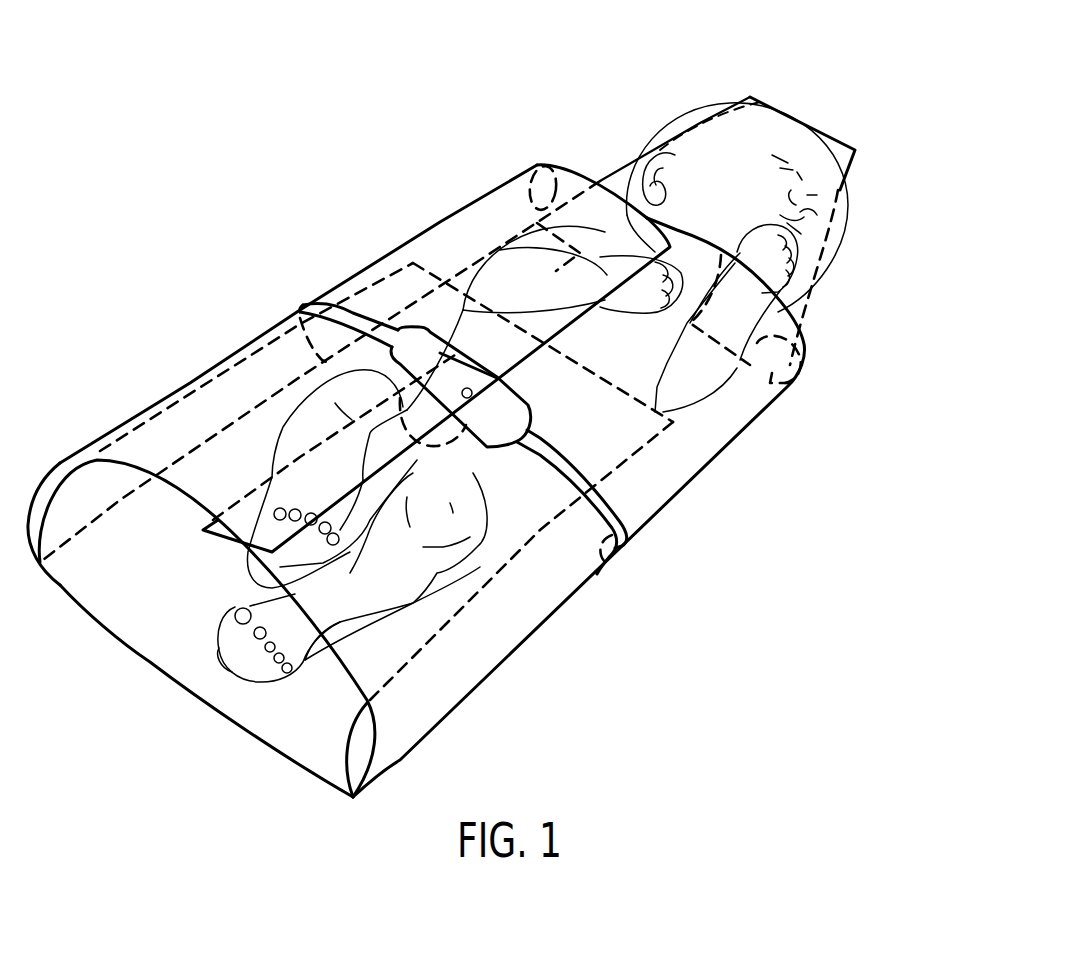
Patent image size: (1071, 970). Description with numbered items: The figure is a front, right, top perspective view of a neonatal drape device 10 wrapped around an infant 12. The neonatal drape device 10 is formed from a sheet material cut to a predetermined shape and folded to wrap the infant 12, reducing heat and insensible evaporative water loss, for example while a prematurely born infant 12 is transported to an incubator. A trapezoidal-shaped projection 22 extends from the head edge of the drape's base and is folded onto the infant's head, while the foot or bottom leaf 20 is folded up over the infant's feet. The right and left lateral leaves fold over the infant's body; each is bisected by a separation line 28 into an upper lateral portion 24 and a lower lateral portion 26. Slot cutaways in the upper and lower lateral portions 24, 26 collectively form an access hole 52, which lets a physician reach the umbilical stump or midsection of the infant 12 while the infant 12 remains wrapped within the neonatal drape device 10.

The neonatal drape device 10 is at (283, 146).
The infant 12 is at (684, 117).
The foot or bottom leaf 20 is at (134, 587).
The trapezoidal-shaped projection 22 is at (837, 143).
The upper lateral portion 24 is at (478, 217).
The lower lateral portion 26 is at (190, 420).
The separation line 28 is at (320, 301).
The access hole 52 is at (450, 377).